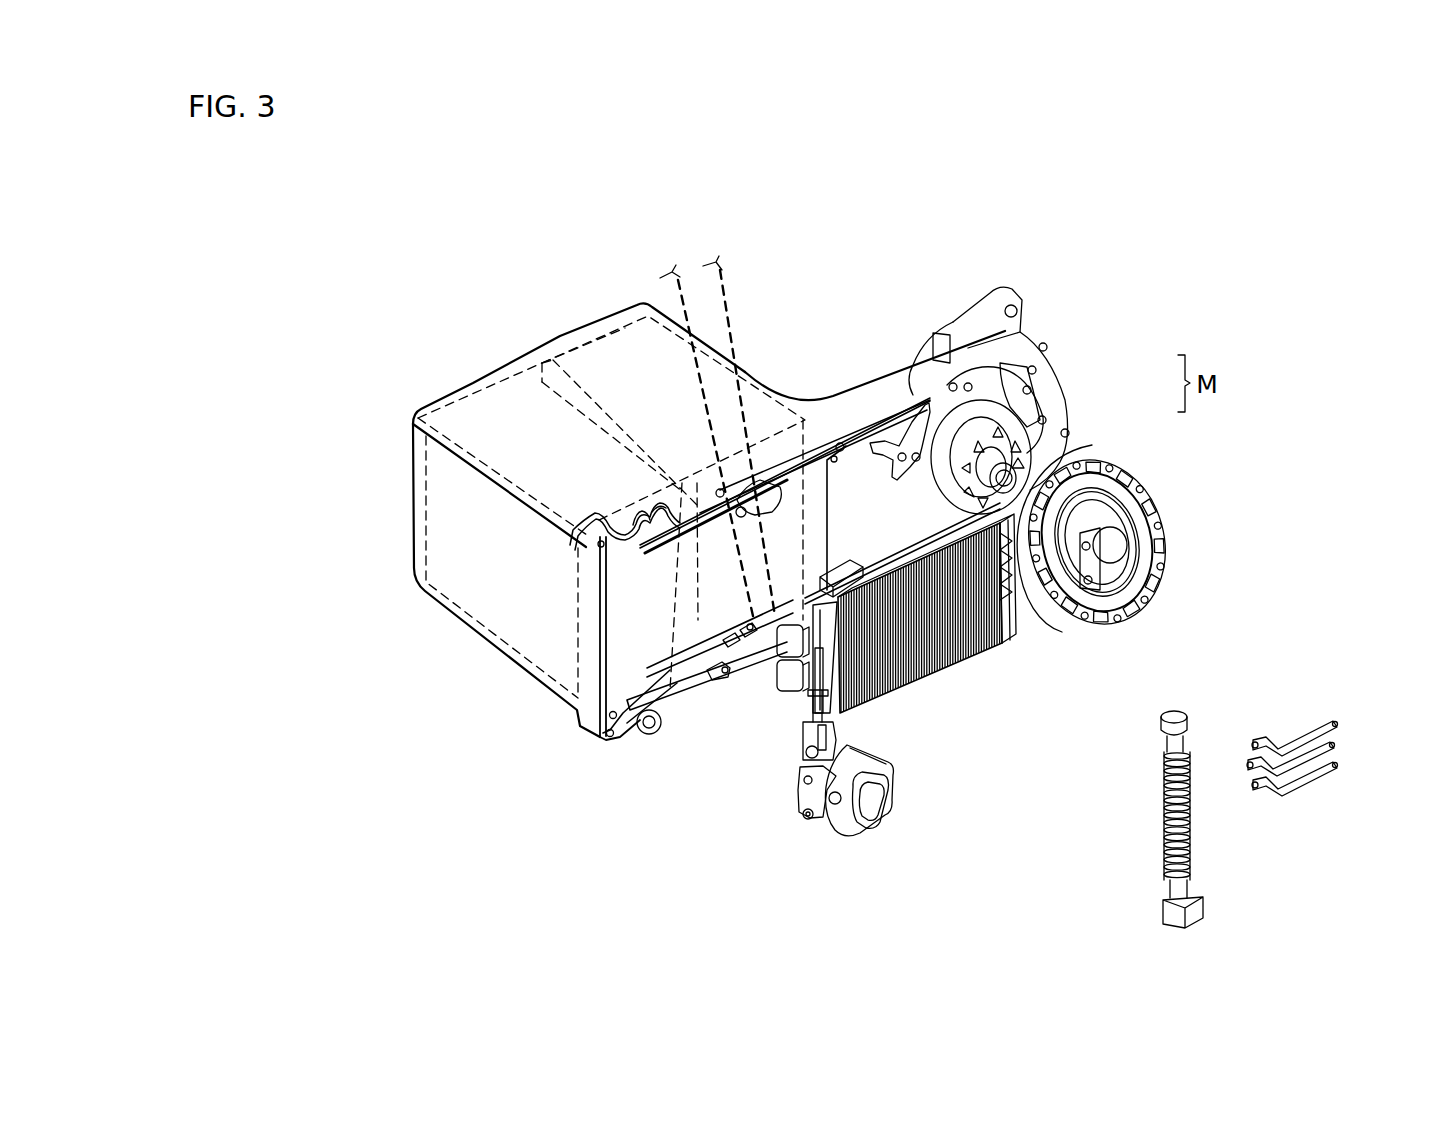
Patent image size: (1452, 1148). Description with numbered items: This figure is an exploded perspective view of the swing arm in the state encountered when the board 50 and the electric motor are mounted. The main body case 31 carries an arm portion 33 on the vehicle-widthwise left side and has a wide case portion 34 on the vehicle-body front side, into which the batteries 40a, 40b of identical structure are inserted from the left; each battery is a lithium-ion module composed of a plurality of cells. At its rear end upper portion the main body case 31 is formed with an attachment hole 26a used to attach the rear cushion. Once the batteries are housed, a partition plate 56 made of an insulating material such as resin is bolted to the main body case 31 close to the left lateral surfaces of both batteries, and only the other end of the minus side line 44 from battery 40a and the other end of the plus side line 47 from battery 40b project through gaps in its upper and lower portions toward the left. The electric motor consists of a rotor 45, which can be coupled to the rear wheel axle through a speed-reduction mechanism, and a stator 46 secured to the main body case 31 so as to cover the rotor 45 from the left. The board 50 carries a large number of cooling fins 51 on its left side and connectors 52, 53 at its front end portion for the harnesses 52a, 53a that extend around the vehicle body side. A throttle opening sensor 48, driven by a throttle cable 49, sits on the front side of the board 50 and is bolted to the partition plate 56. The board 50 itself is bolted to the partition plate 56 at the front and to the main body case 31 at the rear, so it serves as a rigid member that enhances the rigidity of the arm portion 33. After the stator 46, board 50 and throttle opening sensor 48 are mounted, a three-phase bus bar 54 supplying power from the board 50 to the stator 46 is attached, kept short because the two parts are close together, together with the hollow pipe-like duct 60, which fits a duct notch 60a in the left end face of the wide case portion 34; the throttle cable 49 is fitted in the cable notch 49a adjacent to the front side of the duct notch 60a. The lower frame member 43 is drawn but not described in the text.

The attachment hole 26a is at (1016, 308).
The main body case 31 is at (758, 374).
The arm portion 33 is at (872, 407).
The wide case portion 34 is at (465, 530).
The battery 40a is at (485, 394).
The battery 40b is at (608, 335).
The lower frame rail 43 is at (660, 575).
The minus side line 44 is at (692, 570).
The rotor 45 is at (1013, 427).
The stator 46 is at (1107, 455).
The plus side line 47 is at (792, 496).
The throttle opening sensor 48 is at (835, 836).
The throttle cable 49 is at (880, 693).
The cable notch 49a is at (638, 513).
The board 50 is at (935, 672).
The cooling fins 51 is at (1000, 645).
The connector 52 is at (773, 640).
The harness 52a is at (725, 300).
The connector 53 is at (782, 680).
The harness 53a is at (683, 300).
The three-phase bus bar 54 is at (1322, 789).
The partition plate 56 is at (618, 603).
The duct 60 is at (1163, 805).
The duct notch 60a is at (652, 502).